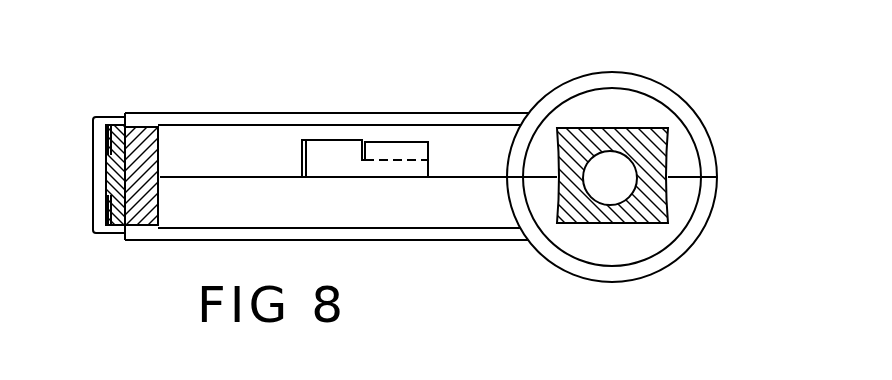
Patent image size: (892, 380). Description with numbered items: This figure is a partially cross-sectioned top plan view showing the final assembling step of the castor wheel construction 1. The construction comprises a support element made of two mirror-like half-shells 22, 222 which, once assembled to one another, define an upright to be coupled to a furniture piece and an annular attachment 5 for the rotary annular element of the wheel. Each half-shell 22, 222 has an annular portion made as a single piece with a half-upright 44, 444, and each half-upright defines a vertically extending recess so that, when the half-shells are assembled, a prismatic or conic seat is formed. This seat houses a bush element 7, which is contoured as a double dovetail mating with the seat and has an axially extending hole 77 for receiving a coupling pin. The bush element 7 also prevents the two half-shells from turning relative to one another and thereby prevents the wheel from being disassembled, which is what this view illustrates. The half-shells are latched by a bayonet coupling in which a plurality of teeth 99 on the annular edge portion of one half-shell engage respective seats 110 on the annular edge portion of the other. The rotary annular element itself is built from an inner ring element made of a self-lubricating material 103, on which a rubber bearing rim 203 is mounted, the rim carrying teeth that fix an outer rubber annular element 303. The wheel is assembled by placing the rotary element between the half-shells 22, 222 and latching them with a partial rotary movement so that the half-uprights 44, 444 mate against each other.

The castor wheel construction 1 is at (742, 137).
The annular attachment 5 is at (421, 182).
The bush element 7 is at (648, 142).
The half-shell 22 is at (498, 242).
The half-upright 44 is at (677, 255).
The axially extending hole 77 is at (613, 168).
The teeth 99 is at (407, 152).
The inner ring element of self-lubricating material 103 is at (150, 137).
The seats 110 is at (331, 152).
The rubber bearing rim 203 is at (119, 138).
The half-shell 222 is at (477, 117).
The rubber annular element 303 is at (95, 118).
The half-upright 444 is at (572, 83).